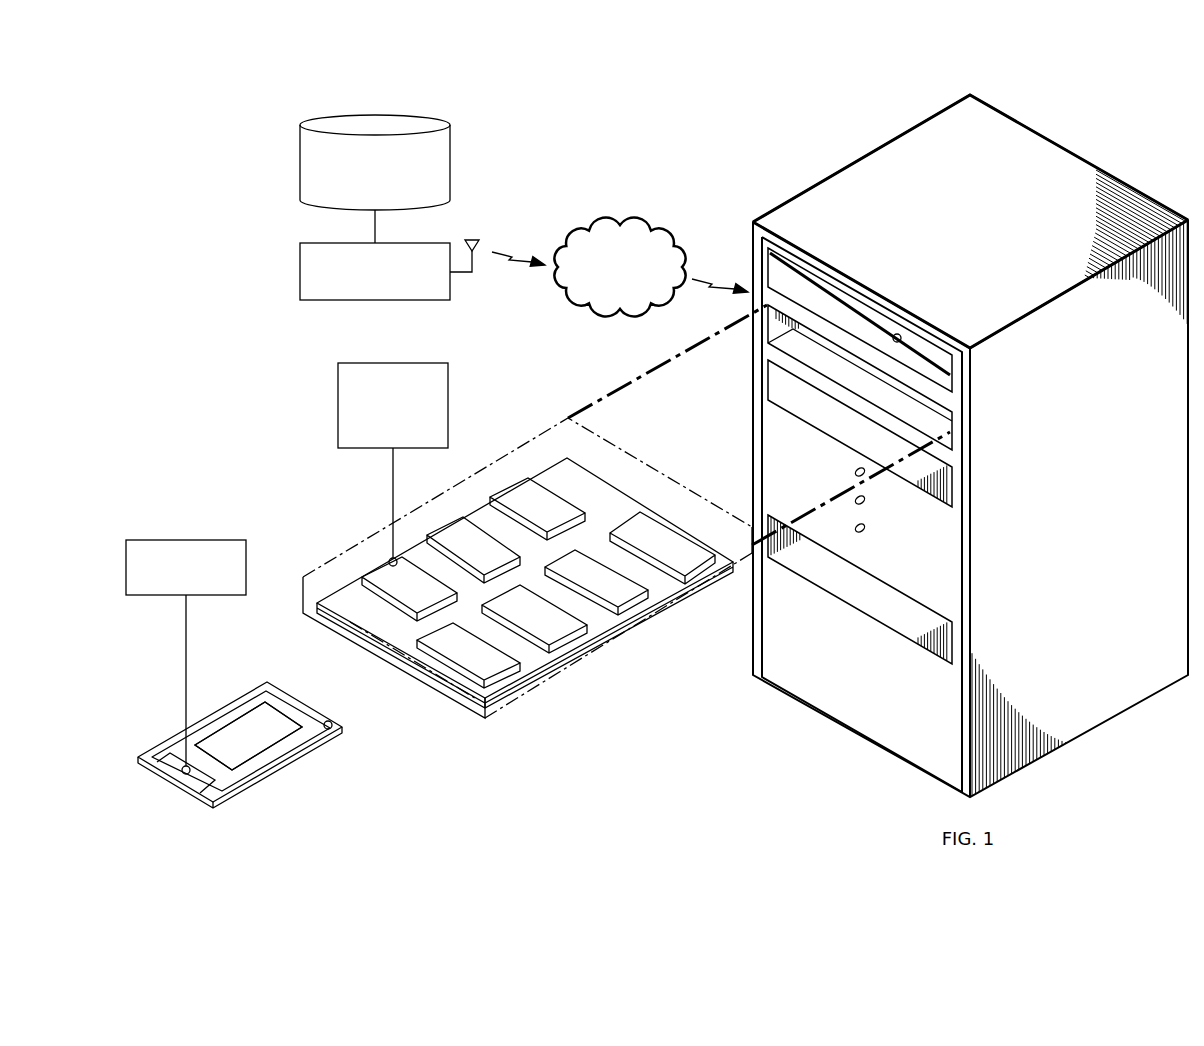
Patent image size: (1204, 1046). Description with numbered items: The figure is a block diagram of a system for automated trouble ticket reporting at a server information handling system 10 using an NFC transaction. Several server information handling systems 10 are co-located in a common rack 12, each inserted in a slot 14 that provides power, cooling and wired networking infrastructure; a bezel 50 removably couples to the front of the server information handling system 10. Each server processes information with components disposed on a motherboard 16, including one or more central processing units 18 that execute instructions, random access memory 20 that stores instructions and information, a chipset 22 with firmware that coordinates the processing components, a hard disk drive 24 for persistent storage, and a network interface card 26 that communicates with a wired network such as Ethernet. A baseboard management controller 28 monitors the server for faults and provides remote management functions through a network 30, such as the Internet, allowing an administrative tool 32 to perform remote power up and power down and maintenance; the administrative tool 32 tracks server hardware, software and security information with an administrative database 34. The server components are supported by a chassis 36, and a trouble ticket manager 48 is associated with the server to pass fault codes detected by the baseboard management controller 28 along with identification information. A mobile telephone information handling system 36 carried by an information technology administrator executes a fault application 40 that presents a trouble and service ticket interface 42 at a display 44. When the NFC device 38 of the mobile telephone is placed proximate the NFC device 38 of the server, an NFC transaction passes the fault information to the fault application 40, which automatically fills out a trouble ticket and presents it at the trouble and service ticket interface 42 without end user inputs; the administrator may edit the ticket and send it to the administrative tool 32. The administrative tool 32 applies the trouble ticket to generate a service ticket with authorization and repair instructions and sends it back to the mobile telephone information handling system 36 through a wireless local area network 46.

The server information handling system 10 is at (627, 715).
The rack 12 is at (1118, 178).
The slot 14 is at (940, 393).
The motherboard 16 is at (651, 502).
The central processing unit 18 is at (440, 528).
The random access memory 20 is at (645, 612).
The chipset 22 is at (576, 646).
The hard disk drive 24 is at (502, 490).
The network interface card 26 is at (708, 578).
The baseboard management controller 28 is at (378, 562).
The network 30 is at (592, 227).
The administrative tool 32 is at (300, 262).
The administrative database 34 is at (300, 162).
The chassis / mobile telephone information handling system 36 is at (308, 792).
The NFC device 38 is at (330, 720).
The fault application 40 is at (178, 540).
The trouble and service ticket interface 42 is at (312, 754).
The display 44 is at (255, 700).
The wireless local area network 46 is at (476, 240).
The trouble ticket manager 48 is at (338, 405).
The bezel 50 is at (842, 308).